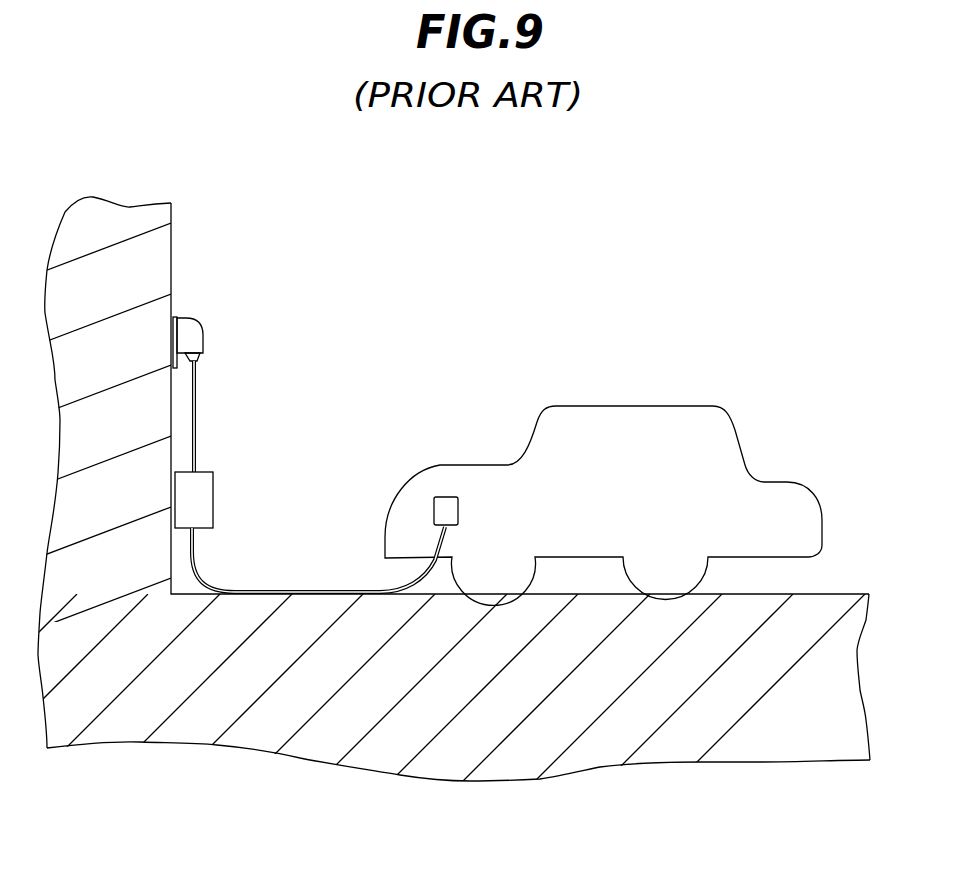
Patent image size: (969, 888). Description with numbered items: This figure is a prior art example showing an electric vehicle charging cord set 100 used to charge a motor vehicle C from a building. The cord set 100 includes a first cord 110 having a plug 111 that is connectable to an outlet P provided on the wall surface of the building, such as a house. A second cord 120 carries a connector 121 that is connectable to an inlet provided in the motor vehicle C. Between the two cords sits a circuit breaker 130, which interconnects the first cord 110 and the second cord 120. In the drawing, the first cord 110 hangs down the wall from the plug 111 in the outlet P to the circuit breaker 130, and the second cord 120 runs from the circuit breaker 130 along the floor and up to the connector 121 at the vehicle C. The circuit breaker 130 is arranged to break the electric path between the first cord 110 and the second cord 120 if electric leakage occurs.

The electric vehicle charging cord set 100 is at (315, 429).
The first cord 110 is at (196, 415).
The plug 111 is at (199, 358).
The second cord 120 is at (303, 591).
The connector 121 is at (442, 502).
The circuit breaker 130 is at (203, 500).
The outlet P is at (183, 318).
The motor vehicle C is at (628, 418).